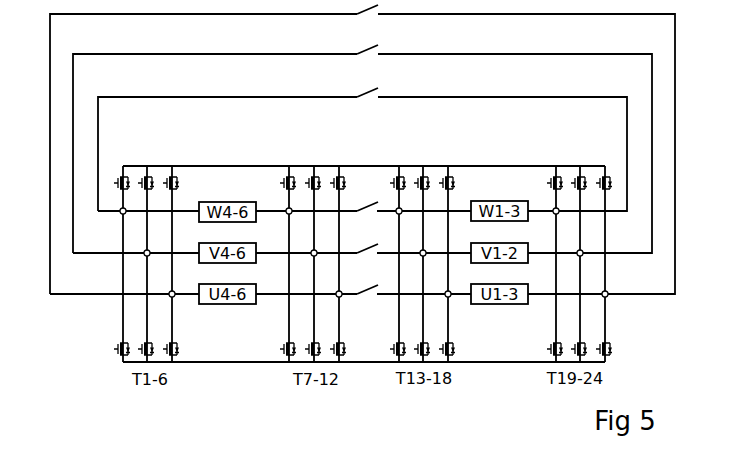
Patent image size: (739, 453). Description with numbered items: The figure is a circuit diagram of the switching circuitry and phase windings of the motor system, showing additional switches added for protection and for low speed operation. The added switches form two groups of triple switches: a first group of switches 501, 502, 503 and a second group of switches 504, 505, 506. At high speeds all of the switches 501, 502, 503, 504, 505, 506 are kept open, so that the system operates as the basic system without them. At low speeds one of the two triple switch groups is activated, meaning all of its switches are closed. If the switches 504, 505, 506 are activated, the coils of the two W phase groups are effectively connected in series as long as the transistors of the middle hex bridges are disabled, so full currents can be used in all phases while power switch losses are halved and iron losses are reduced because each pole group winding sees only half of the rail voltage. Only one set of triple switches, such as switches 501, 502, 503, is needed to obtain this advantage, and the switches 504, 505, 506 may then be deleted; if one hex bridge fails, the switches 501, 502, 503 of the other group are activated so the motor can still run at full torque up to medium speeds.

The switch 501 is at (362, 149).
The switch 502 is at (362, 149).
The switch 503 is at (362, 149).
The switch 504 is at (367, 217).
The switch 505 is at (367, 260).
The switch 506 is at (367, 303).